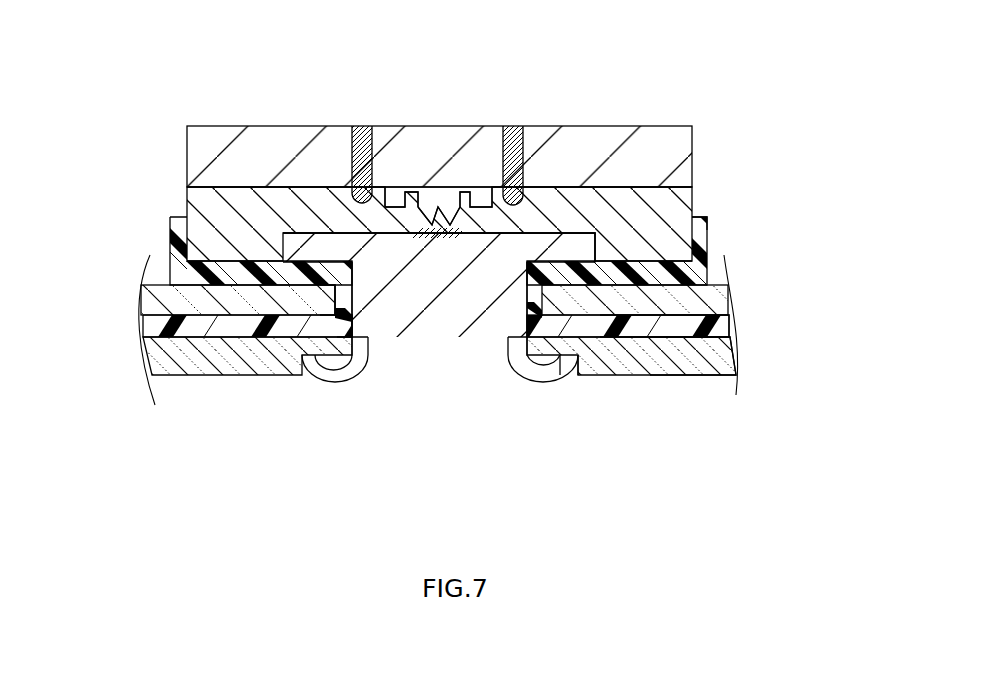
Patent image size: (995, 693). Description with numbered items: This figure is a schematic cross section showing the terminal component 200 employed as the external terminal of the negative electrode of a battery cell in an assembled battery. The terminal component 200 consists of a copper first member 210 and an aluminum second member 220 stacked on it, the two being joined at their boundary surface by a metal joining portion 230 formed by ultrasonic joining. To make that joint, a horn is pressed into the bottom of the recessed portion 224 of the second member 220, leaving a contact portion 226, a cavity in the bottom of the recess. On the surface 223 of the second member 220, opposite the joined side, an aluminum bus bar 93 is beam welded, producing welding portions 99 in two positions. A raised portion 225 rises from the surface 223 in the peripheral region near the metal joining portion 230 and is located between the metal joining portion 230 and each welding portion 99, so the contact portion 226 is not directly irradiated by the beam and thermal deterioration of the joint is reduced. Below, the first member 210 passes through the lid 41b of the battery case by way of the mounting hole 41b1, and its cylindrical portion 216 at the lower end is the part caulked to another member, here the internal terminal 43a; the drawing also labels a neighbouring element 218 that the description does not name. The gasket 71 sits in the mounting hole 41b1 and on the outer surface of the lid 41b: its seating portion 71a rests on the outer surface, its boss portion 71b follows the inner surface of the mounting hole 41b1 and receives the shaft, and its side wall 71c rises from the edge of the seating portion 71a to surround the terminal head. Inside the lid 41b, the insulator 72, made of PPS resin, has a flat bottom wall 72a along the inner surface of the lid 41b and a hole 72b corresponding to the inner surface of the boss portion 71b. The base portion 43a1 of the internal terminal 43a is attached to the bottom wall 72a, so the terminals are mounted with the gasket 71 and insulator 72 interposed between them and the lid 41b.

The terminal component 200 is at (713, 73).
The bus bar 93 is at (210, 125).
The welding portions 99 is at (360, 125).
The surface 223 is at (218, 186).
The second member 220 is at (185, 193).
The recessed portion 224 is at (396, 205).
The contact portion 226 is at (446, 218).
The raised portion 225 is at (455, 222).
The metal joining portion 230 is at (455, 240).
The first member 210 is at (443, 266).
The cylindrical portion 216 is at (510, 385).
The second hook portion 218 is at (571, 399).
The gasket 71 is at (168, 236).
The seating portion 71a is at (647, 258).
The side wall 71c is at (691, 218).
The boss portion 71b is at (362, 318).
The lid 41b is at (722, 298).
The mounting hole 41b1 is at (350, 300).
The insulator 72 is at (718, 330).
The bottom wall 72a is at (634, 338).
The hole 72b is at (366, 340).
The internal terminal 43a is at (720, 355).
The base portion 43a1 is at (700, 355).